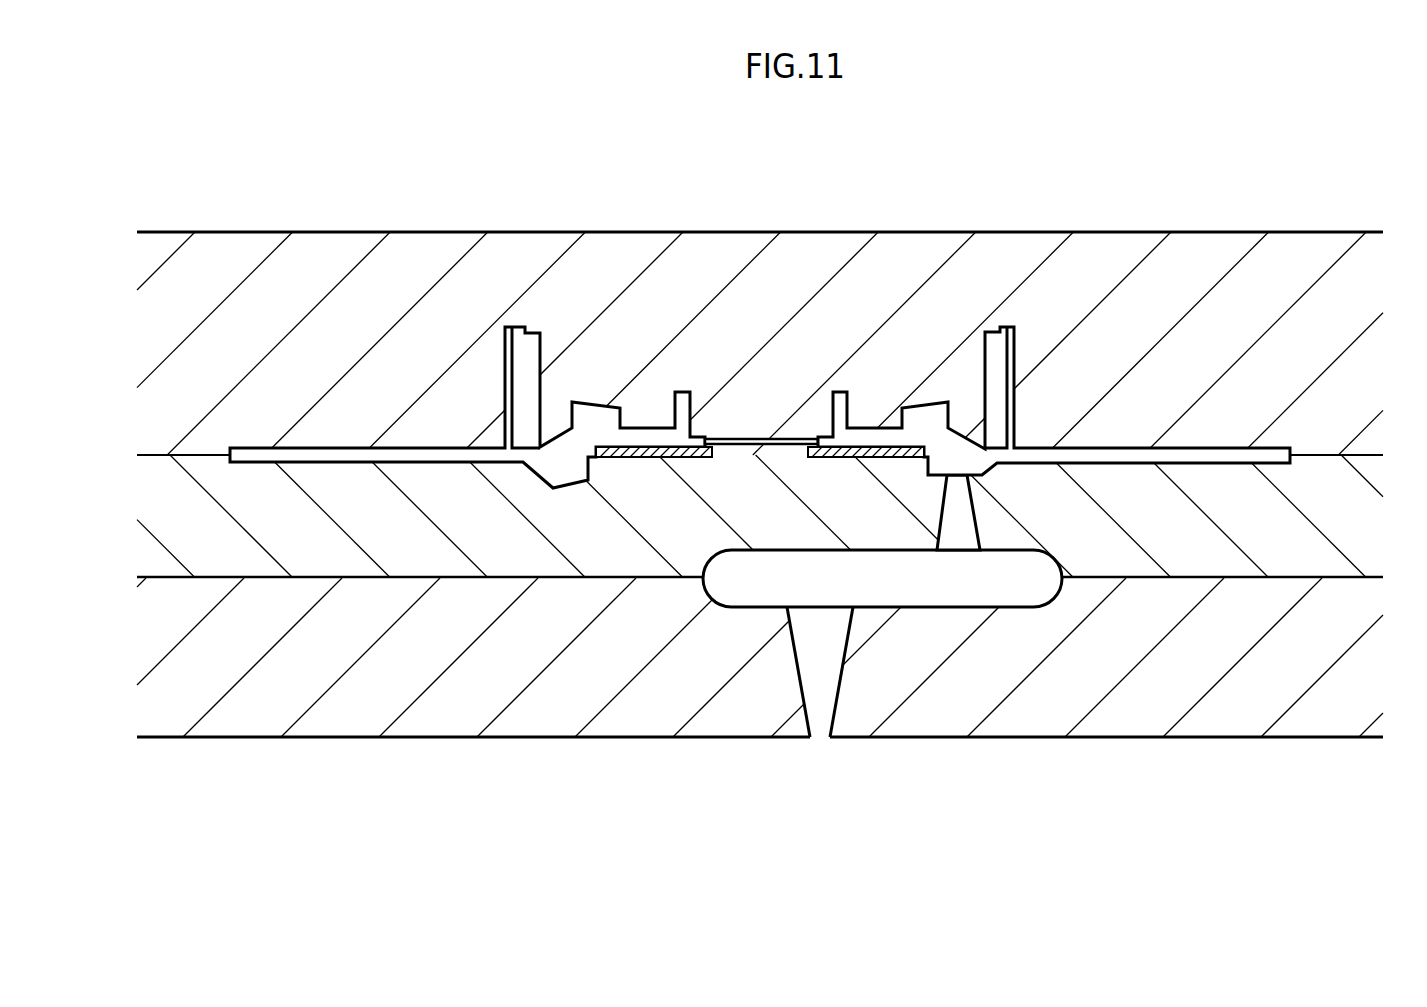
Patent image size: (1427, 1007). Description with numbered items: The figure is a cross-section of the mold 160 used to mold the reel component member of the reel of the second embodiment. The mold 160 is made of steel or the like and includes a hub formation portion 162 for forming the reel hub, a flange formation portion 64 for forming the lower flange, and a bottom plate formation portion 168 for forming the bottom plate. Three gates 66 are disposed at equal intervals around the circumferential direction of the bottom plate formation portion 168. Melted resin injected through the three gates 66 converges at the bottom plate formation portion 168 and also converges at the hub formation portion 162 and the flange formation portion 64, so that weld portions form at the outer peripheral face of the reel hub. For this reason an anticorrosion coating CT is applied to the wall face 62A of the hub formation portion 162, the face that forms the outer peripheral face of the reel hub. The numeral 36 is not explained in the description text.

The mold 160 is at (1195, 212).
The bottom plate formation portion 168 is at (663, 440).
The hub formation portion 162 is at (995, 355).
The anticorrosion coating CT is at (514, 359).
The wall face 62A is at (513, 405).
The flange formation portion 64 is at (1227, 452).
The bonding layer 36 is at (641, 458).
The gates 66 is at (953, 478).